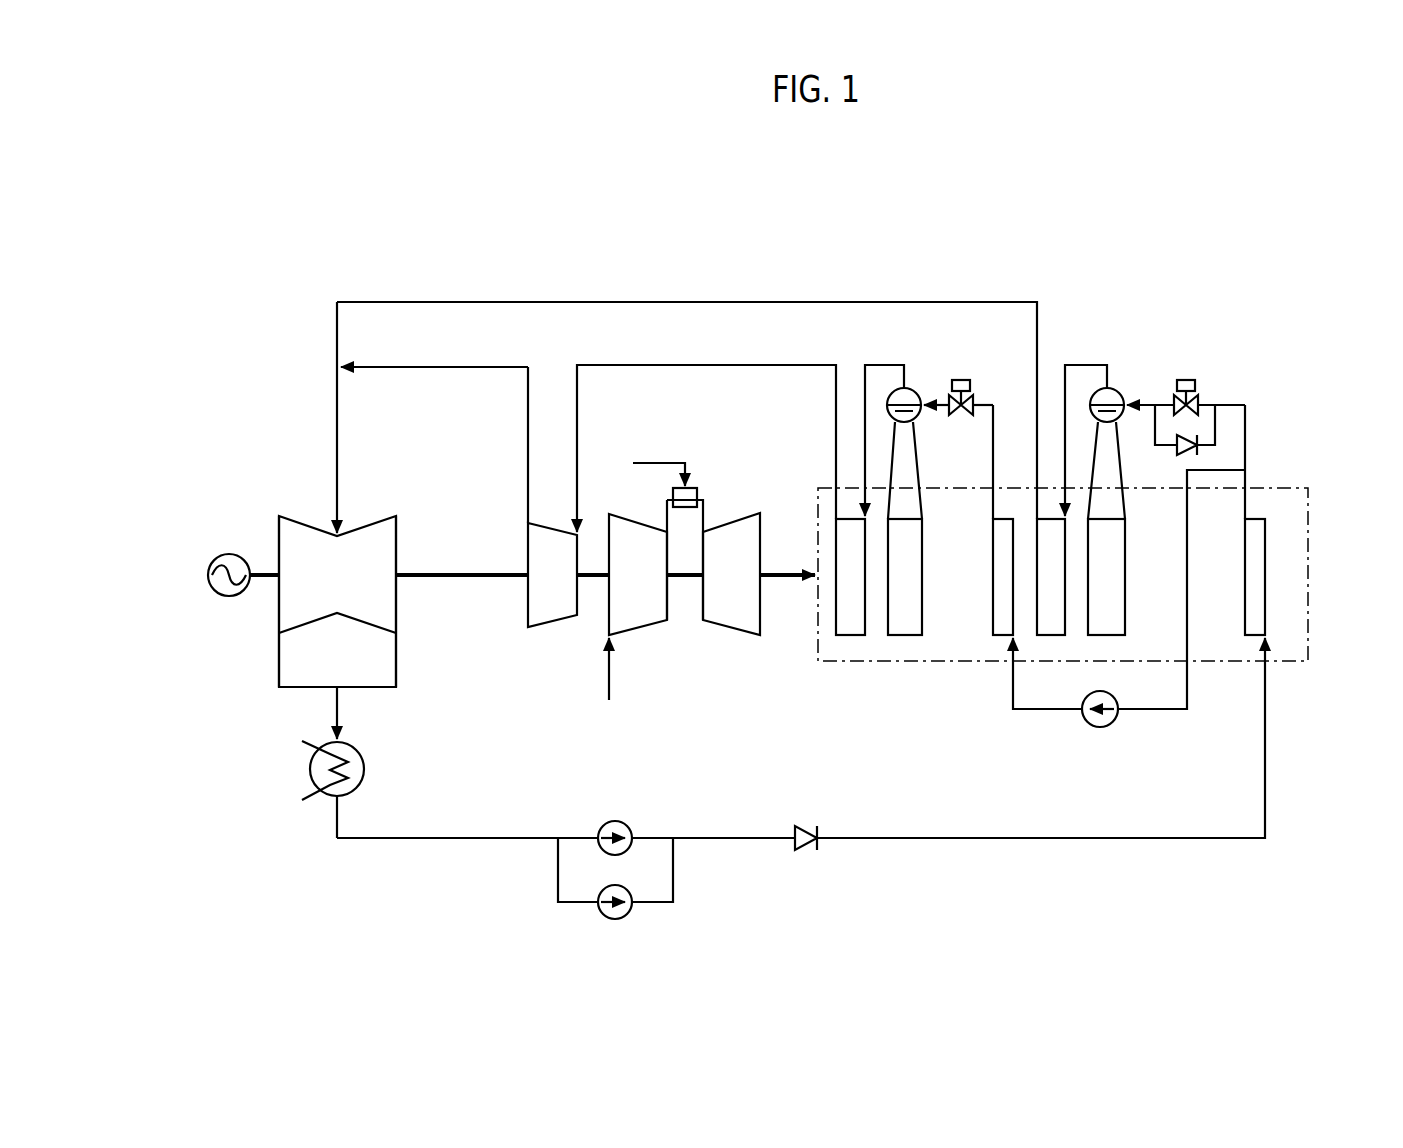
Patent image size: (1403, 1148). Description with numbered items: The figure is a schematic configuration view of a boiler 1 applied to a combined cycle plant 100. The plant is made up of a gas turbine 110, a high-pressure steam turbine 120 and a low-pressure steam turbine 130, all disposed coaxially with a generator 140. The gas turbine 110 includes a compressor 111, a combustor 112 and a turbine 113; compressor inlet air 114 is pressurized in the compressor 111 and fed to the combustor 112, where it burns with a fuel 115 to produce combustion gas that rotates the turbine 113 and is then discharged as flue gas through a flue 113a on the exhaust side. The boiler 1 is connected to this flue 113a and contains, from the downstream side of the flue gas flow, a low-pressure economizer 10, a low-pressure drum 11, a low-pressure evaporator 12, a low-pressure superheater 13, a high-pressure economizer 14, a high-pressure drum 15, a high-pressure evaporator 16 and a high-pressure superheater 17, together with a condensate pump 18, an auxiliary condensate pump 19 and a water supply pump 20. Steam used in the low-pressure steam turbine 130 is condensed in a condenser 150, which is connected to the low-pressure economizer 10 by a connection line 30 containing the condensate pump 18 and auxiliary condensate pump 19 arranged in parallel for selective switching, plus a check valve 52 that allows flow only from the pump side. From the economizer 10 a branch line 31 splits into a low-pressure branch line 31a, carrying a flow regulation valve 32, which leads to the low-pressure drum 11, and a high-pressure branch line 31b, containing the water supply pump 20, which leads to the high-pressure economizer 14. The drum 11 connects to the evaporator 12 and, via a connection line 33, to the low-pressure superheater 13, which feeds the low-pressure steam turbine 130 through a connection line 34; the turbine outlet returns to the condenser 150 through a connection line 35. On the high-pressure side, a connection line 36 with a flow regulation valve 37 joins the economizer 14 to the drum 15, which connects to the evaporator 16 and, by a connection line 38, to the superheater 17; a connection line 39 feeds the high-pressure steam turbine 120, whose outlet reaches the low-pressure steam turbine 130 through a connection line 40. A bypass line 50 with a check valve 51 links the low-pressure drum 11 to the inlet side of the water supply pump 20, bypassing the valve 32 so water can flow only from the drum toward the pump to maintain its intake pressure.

The boiler 1 is at (1313, 602).
The low-pressure economizer 10 is at (1256, 637).
The low-pressure drum 11 is at (1121, 393).
The low-pressure evaporator 12 is at (1125, 612).
The low-pressure superheater 13 is at (1050, 637).
The high-pressure economizer 14 is at (1003, 637).
The high-pressure drum 15 is at (924, 395).
The high-pressure evaporator 16 is at (905, 637).
The high-pressure superheater 17 is at (850, 637).
The condensate pump 18 is at (630, 826).
The auxiliary condensate pump 19 is at (633, 908).
The water supply pump 20 is at (1092, 727).
The connection line 30 is at (920, 838).
The branch line 31 is at (1245, 455).
The low-pressure branch line 31a is at (1230, 405).
The high-pressure branch line 31b is at (1187, 585).
The flow regulation valve 32 is at (1196, 395).
The connection line 33 is at (1090, 365).
The connection line 34 is at (700, 302).
The connection line 35 is at (279, 668).
The connection line 36 is at (991, 458).
The flow regulation valve 37 is at (975, 395).
The connection line 38 is at (890, 365).
The connection line 39 is at (700, 365).
The connection line 40 is at (413, 367).
The bypass line 50 is at (1257, 418).
The check valve 51 is at (1185, 458).
The check valve 52 is at (808, 830).
The combined cycle plant 100 is at (978, 210).
The gas turbine 110 is at (705, 570).
The compressor 111 is at (660, 622).
The combustor 112 is at (670, 494).
The turbine 113 is at (725, 628).
The flue 113a is at (777, 578).
The compressor inlet air 114 is at (609, 680).
The fuel 115 is at (645, 461).
The high-pressure steam turbine 120 is at (550, 630).
The low-pressure steam turbine 130 is at (291, 517).
The generator 140 is at (229, 555).
The condenser 150 is at (365, 768).